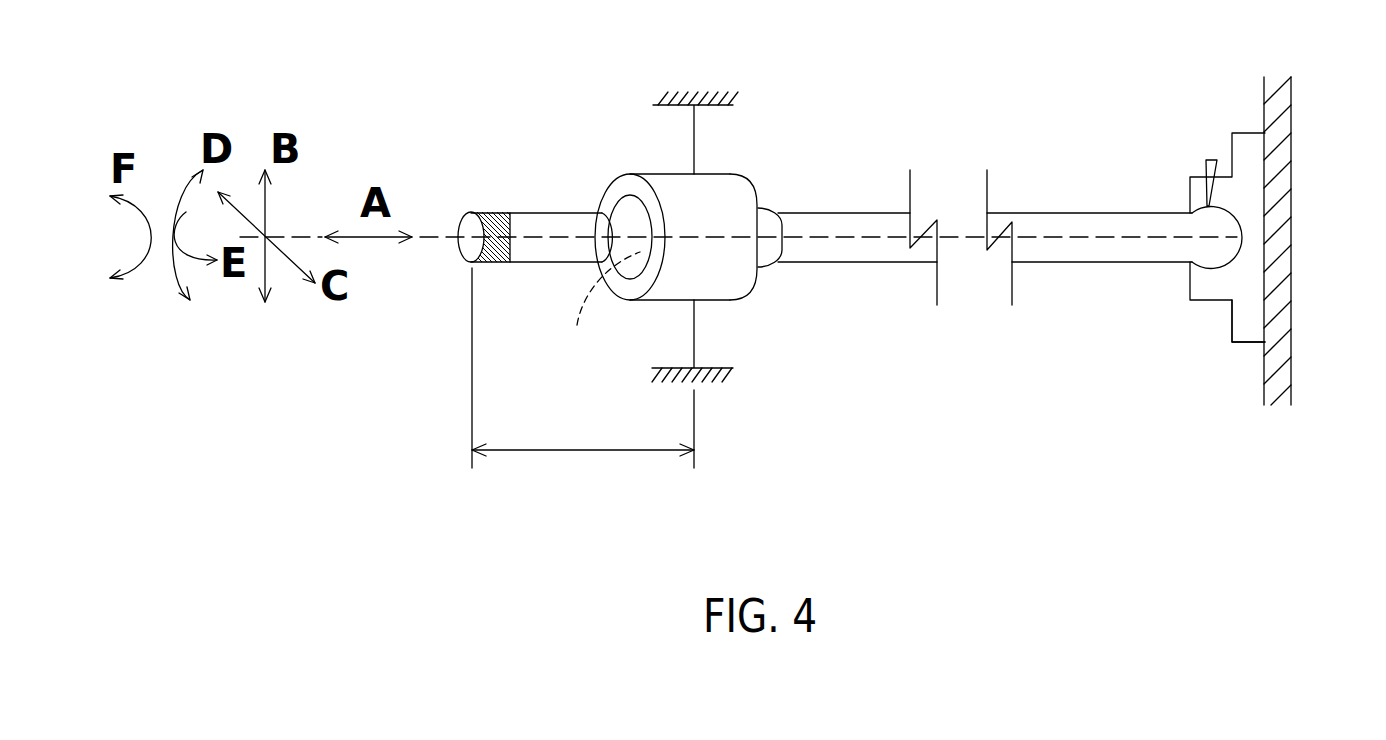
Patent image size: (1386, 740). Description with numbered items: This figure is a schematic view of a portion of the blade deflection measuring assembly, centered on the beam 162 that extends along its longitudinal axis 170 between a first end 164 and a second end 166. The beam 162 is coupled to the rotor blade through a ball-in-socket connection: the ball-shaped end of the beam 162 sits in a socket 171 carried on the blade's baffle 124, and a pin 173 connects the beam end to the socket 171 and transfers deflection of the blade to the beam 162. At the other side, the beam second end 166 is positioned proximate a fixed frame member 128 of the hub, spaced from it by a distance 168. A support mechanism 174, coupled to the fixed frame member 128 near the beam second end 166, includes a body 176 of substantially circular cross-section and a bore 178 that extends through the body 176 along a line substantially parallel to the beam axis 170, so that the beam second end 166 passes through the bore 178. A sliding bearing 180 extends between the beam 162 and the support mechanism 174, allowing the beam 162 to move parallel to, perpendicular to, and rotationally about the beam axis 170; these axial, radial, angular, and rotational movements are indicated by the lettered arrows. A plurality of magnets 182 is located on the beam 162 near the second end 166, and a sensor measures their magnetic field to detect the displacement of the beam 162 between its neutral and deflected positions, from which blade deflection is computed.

The baffle 124 is at (1280, 327).
The fixed frame member 128 is at (694, 333).
The beam 162 is at (1065, 222).
The beam first end 164 is at (1242, 233).
The beam second end 166 is at (472, 227).
The distance 168 is at (583, 450).
The beam longitudinal axis 170 is at (1105, 240).
The socket 171 is at (1240, 325).
The pin 173 is at (1207, 163).
The support mechanism 174 is at (734, 170).
The body 176 is at (665, 288).
The bore 178 is at (599, 306).
The sliding bearing 180 is at (625, 212).
The magnets 182 is at (492, 212).